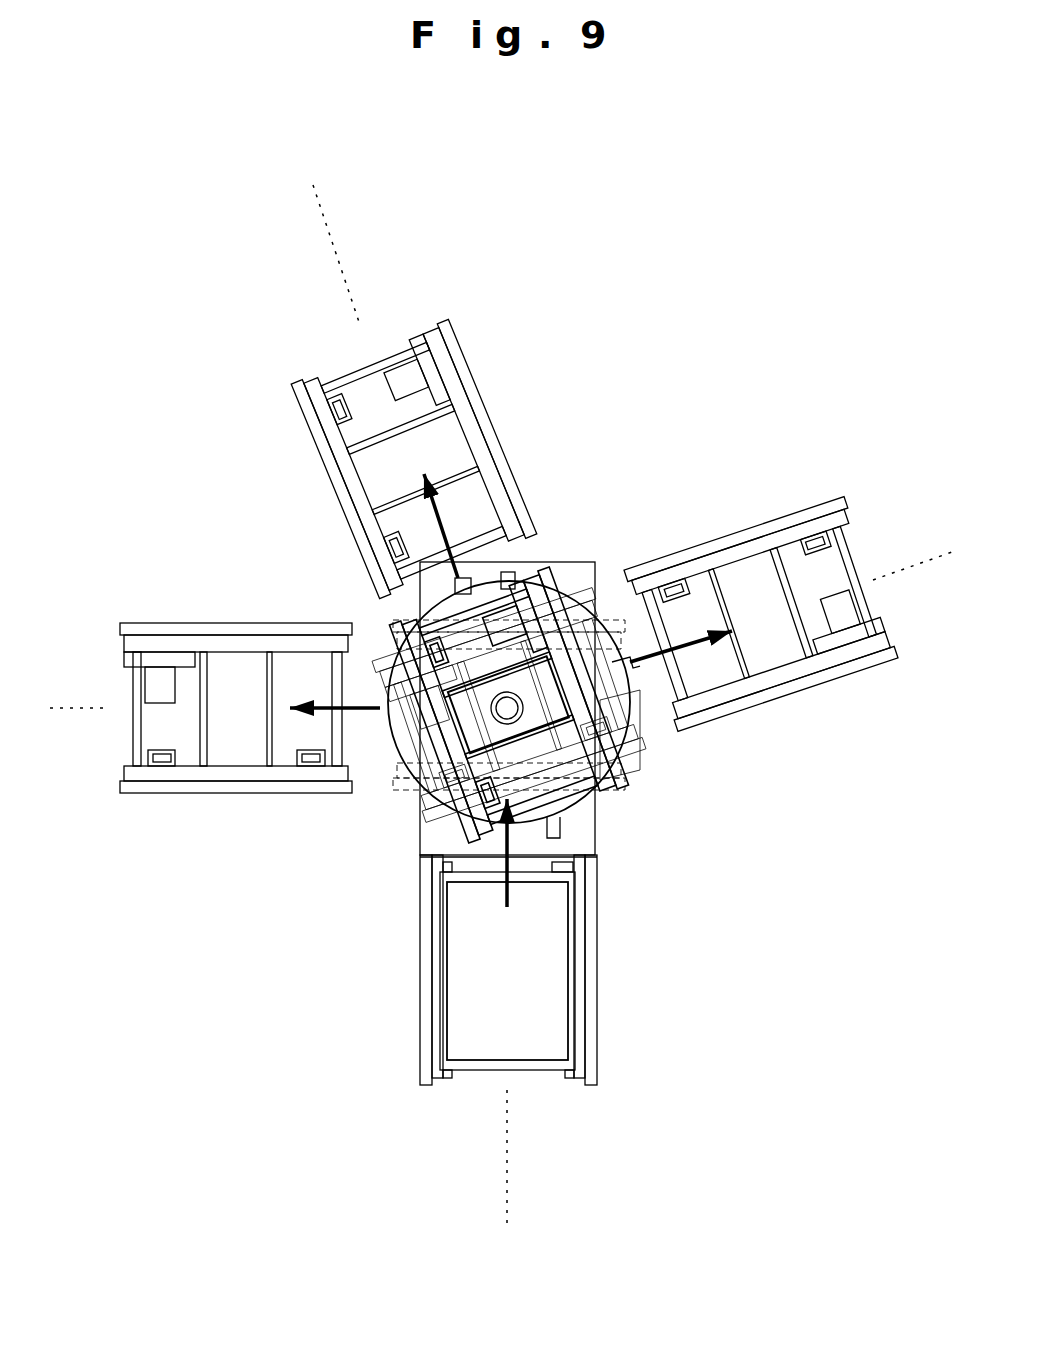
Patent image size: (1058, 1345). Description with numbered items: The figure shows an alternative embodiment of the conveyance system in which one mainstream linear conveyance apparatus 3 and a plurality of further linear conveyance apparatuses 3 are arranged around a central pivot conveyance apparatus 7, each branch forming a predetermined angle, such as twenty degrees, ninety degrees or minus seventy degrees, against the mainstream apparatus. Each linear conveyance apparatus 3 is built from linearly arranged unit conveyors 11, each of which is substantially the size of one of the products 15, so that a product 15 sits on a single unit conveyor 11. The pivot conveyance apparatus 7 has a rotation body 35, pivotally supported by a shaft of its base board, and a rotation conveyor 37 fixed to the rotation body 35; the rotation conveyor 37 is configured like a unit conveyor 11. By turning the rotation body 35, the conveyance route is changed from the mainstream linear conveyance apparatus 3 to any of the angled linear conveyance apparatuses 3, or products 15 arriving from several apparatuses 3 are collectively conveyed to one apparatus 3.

The linear conveyance apparatus 3 is at (509, 699).
The pivot conveyance apparatus 7 is at (553, 634).
The unit conveyor 11 is at (347, 465).
The product 15 is at (468, 933).
The rotation body 35 is at (618, 690).
The rotation conveyor 37 is at (627, 723).